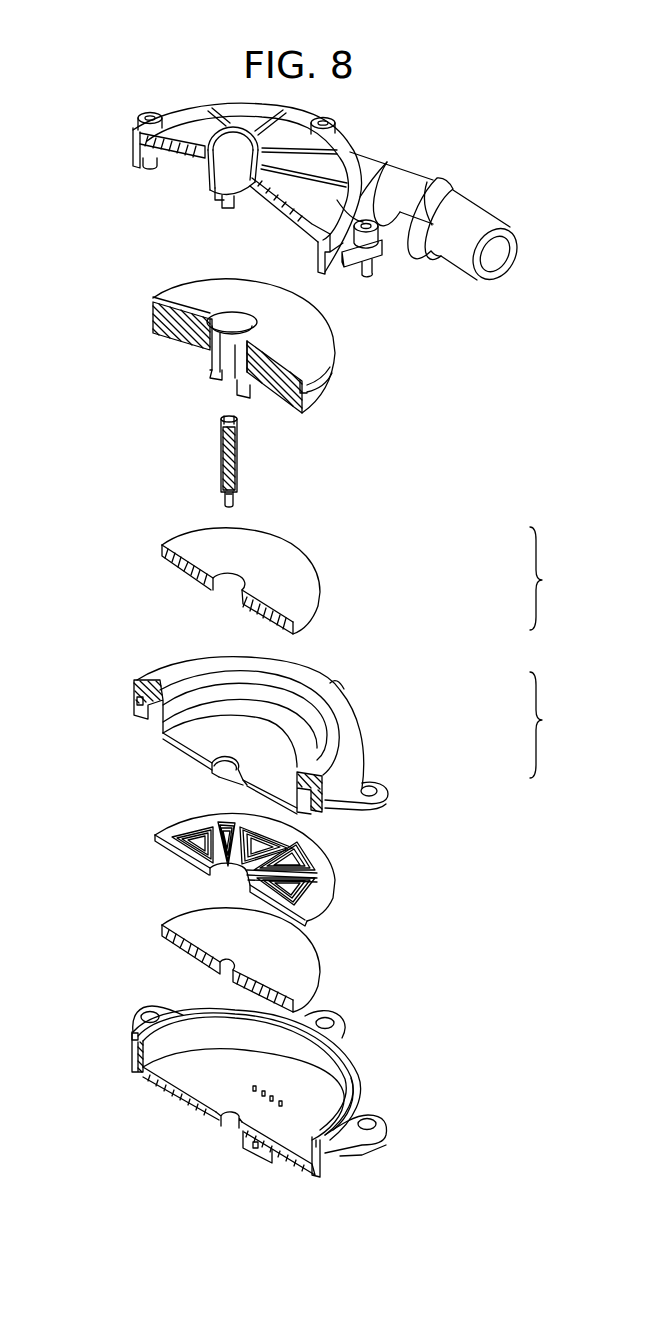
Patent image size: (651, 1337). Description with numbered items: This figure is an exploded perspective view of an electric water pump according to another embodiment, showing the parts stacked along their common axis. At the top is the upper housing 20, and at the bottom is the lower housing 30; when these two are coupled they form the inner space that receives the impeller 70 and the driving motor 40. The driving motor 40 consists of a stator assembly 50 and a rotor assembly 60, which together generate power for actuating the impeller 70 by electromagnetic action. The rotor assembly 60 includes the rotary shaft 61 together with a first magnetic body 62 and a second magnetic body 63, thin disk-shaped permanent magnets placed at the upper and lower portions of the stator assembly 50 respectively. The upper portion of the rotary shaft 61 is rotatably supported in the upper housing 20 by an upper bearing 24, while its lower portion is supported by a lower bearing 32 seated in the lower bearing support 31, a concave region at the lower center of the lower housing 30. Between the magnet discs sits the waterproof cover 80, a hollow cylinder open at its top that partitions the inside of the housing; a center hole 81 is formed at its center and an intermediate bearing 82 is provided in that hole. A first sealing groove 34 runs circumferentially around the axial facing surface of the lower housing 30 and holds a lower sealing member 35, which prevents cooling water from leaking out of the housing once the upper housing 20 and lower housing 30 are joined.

The upper housing 20 is at (120, 114).
The impeller 70 is at (147, 294).
The rotary shaft 61 is at (205, 453).
The upper bearing 24 is at (237, 421).
The lower bearing 32 is at (238, 498).
The first magnetic body 62 is at (157, 531).
The waterproof cover 80 is at (120, 679).
The intermediate bearing 82 is at (218, 765).
The center hole 81 is at (233, 778).
The stator assembly 50 is at (157, 824).
The second magnetic body 63 is at (157, 908).
The lower housing 30 is at (120, 1016).
The lower bearing support 31 is at (231, 1126).
The first sealing groove 34 is at (327, 1157).
The lower sealing member 35 is at (357, 1096).
The driving motor 40 is at (537, 578).
The rotor assembly 60 is at (537, 725).